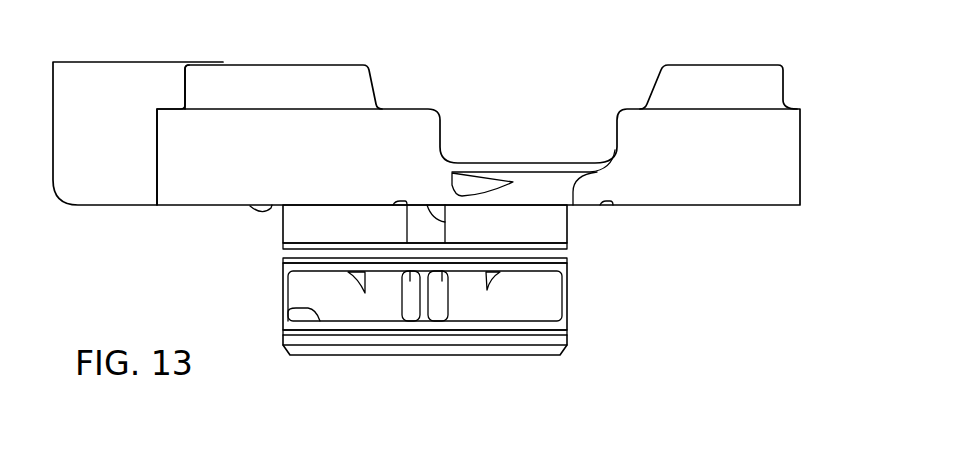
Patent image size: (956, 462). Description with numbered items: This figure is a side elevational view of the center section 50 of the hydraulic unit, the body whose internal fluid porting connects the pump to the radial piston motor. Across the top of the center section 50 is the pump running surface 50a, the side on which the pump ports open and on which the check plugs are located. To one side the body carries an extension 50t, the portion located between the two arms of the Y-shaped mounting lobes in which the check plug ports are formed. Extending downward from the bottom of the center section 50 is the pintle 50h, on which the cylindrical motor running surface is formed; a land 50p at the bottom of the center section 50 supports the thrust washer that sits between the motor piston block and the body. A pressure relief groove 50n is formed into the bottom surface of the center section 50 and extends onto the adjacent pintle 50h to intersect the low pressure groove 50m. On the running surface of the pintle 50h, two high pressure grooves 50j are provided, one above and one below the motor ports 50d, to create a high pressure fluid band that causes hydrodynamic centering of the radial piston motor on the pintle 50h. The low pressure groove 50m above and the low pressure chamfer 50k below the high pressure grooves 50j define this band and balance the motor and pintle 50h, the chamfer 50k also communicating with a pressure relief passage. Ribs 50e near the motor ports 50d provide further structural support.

The center section 50 is at (309, 160).
The pump running surface 50a is at (532, 105).
The motor ports 50d is at (300, 310).
The ribs 50e is at (428, 300).
The pintle 50h is at (363, 238).
The high pressure grooves 50j is at (565, 260).
The low pressure chamfer 50k is at (565, 352).
The low pressure groove 50m is at (567, 247).
The pressure relief groove 50n is at (427, 230).
The land 50p is at (257, 213).
The extension 50t is at (123, 112).